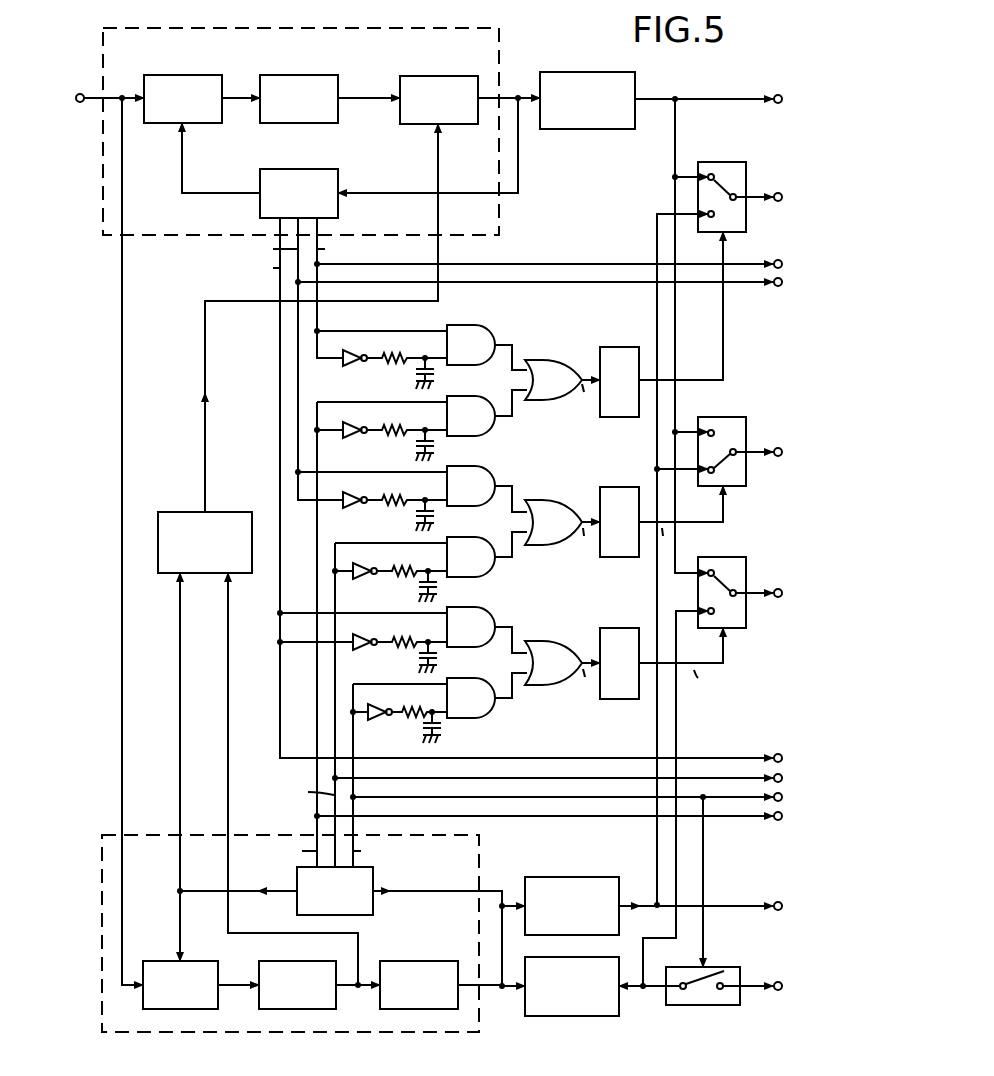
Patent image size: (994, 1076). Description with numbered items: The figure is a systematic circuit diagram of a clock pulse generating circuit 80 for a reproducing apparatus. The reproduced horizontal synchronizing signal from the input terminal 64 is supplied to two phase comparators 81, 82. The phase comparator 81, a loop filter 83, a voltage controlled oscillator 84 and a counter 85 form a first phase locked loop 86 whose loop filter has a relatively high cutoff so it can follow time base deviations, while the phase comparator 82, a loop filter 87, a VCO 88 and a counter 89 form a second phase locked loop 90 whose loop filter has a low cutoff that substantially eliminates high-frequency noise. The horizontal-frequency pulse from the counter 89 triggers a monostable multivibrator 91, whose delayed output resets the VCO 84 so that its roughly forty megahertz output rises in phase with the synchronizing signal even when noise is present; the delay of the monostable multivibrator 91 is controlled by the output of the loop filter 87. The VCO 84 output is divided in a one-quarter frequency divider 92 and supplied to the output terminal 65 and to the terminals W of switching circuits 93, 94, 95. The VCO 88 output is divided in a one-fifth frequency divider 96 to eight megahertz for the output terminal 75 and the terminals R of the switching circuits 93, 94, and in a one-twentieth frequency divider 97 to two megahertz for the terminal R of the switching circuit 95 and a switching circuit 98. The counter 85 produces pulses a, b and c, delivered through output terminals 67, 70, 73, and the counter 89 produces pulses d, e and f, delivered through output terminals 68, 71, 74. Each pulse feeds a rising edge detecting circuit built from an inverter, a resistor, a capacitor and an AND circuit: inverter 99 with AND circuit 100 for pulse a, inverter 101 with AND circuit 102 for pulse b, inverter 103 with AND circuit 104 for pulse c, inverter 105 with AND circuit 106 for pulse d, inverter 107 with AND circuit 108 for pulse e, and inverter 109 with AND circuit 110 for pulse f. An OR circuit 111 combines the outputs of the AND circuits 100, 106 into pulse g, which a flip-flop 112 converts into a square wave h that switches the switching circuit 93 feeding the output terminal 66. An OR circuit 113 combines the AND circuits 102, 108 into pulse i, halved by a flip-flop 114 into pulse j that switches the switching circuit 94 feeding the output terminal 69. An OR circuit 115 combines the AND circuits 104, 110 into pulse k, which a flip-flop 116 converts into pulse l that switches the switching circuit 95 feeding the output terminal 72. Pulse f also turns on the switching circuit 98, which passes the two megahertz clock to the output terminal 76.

The input terminal 64 is at (80, 93).
The output terminal 65 is at (778, 94).
The output terminal 66 is at (778, 192).
The output terminal 67 is at (778, 259).
The output terminal 68 is at (778, 821).
The output terminal 69 is at (778, 447).
The output terminal 70 is at (777, 287).
The output terminal 71 is at (783, 778).
The output terminal 72 is at (778, 588).
The output terminal 73 is at (778, 753).
The output terminal 74 is at (783, 797).
The output terminal 75 is at (778, 901).
The output terminal 76 is at (778, 981).
The clock pulse generating circuit 80 is at (574, 40).
The phase comparator 81 is at (180, 75).
The phase comparator 82 is at (165, 961).
The loop filter 83 is at (296, 75).
The voltage controlled oscillator 84 is at (437, 76).
The counter 85 is at (295, 169).
The first phase locked loop 86 is at (500, 40).
The loop filter 87 is at (294, 961).
The voltage controlled oscillator 88 is at (422, 955).
The counter 89 is at (373, 873).
The second phase locked loop 90 is at (480, 845).
The monostable multivibrator 91 is at (214, 512).
The 1/4-frequency divider 92 is at (583, 72).
The switching circuit 93 is at (722, 158).
The switching circuit 94 is at (722, 413).
The switching circuit 95 is at (722, 553).
The 1/5-frequency divider 96 is at (563, 877).
The 1/20-frequency divider 97 is at (572, 1016).
The switching circuit 98 is at (705, 1006).
The inverter 99 is at (352, 366).
The AND circuit 100 is at (486, 332).
The inverter 101 is at (352, 508).
The AND circuit 102 is at (486, 470).
The inverter 103 is at (362, 650).
The AND circuit 104 is at (486, 613).
The inverter 105 is at (352, 438).
The AND circuit 106 is at (470, 400).
The inverter 107 is at (362, 579).
The AND circuit 108 is at (470, 541).
The inverter 109 is at (377, 720).
The AND circuit 110 is at (470, 684).
The OR circuit 111 is at (553, 362).
The flip-flop 112 is at (614, 347).
The OR circuit 113 is at (558, 506).
The flip-flop 114 is at (614, 487).
The OR circuit 115 is at (550, 646).
The flip-flop 116 is at (614, 628).